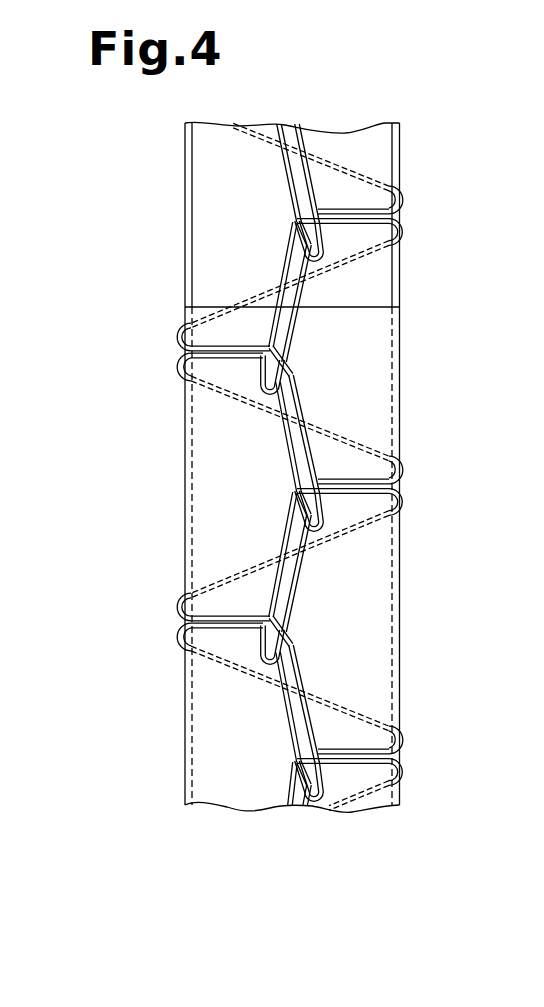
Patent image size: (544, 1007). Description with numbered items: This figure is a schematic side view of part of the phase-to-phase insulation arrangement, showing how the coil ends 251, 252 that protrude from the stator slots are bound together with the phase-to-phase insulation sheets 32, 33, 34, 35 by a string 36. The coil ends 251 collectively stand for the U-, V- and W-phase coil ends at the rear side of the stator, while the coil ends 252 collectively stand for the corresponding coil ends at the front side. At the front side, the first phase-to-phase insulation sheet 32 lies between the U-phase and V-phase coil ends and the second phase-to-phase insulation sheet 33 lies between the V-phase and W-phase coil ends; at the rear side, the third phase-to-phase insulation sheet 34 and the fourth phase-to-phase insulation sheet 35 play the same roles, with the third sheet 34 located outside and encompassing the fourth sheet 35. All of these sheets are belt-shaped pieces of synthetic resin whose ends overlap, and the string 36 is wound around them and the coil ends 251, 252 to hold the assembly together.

The string 36 is at (290, 257).
The fourth phase-to-phase insulation sheet 35 is at (400, 152).
The second phase-to-phase insulation sheet 33 is at (420, 157).
The coil ends 251 is at (381, 290).
The coil ends 252 is at (400, 322).
The third phase-to-phase insulation sheet 34 is at (381, 350).
The first phase-to-phase insulation sheet 32 is at (410, 353).